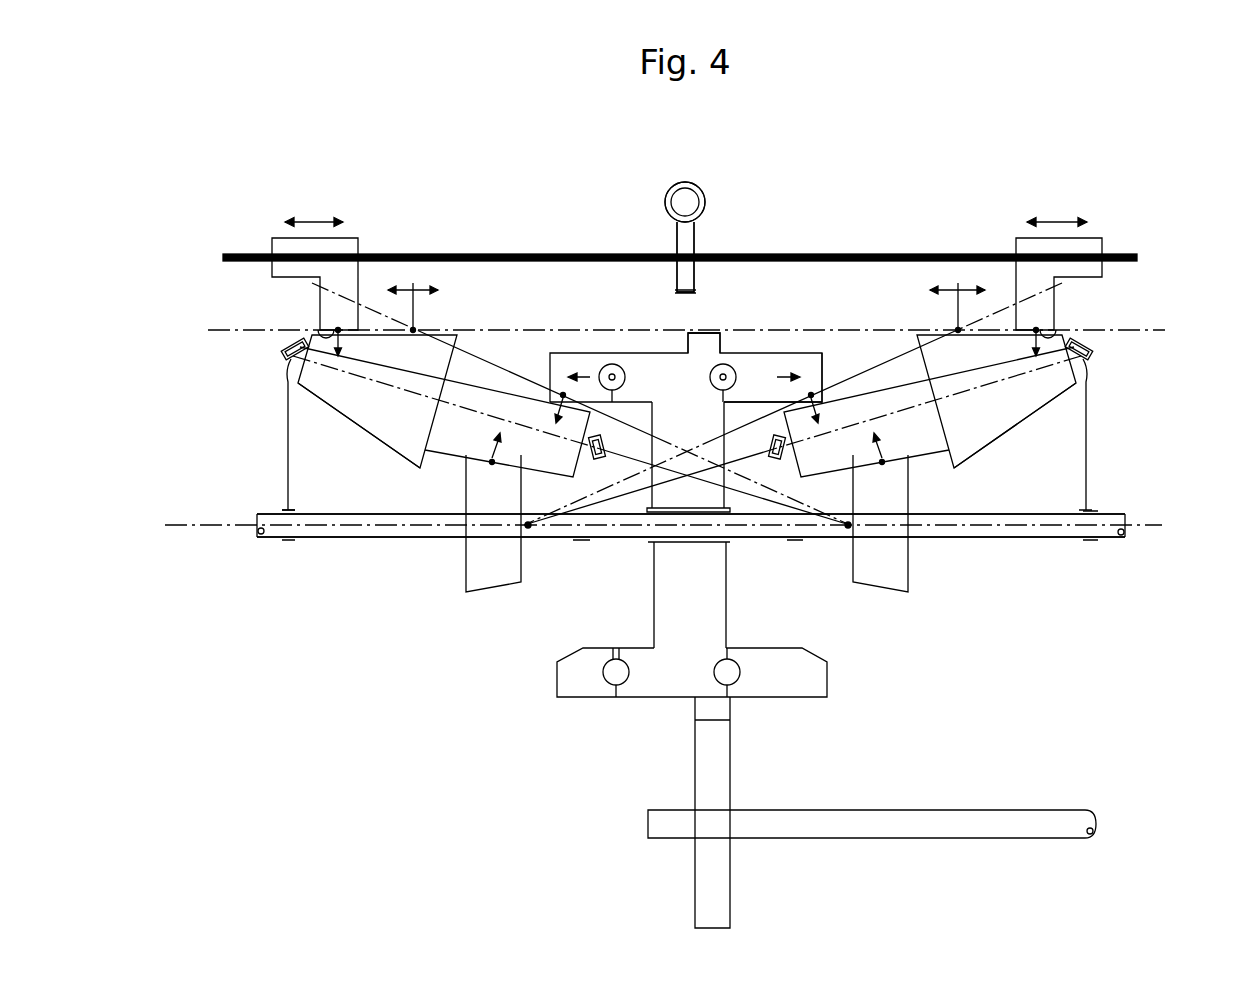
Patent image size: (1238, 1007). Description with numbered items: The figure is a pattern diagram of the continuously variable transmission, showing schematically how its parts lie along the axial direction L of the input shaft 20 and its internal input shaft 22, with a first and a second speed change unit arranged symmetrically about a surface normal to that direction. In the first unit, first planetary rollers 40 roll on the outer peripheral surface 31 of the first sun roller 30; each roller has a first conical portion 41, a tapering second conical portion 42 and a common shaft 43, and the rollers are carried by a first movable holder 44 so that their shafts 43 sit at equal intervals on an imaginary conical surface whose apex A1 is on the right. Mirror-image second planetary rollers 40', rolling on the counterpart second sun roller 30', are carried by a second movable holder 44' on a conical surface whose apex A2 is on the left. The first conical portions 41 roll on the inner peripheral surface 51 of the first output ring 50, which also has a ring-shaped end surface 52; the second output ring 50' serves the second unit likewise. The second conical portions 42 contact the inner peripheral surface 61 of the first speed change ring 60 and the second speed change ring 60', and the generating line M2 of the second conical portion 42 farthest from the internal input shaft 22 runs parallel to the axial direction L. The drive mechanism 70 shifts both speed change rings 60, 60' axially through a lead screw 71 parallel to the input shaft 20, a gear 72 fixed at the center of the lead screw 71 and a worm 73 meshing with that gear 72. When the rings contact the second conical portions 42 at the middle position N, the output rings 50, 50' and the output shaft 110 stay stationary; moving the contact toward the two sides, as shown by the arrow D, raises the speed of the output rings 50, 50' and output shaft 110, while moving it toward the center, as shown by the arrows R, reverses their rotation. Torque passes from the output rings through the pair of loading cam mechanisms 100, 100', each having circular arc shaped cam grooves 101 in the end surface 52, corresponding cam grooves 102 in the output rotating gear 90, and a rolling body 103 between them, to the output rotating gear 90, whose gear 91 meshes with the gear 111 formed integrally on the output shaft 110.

The input shaft 20 is at (691, 581).
The internal input shaft 22 is at (390, 540).
The first sun roller 30 is at (451, 544).
The shift block 30' is at (937, 532).
The outer peripheral surface 31 is at (491, 460).
The first planetary roller 40 is at (377, 422).
The second planetary roller 40' is at (996, 422).
The first conical portion 41 is at (478, 356).
The second conical portion 42 is at (347, 425).
The common shaft 43 is at (297, 362).
The first movable holder 44 is at (521, 440).
The second movable holder 44' is at (860, 440).
The first output ring 50 is at (681, 336).
The second output ring 50' is at (776, 336).
The inner peripheral surface 51 is at (558, 395).
The ring-shaped end surface 52 is at (599, 364).
The first speed change ring 60 is at (330, 235).
The second speed change ring 60' is at (1078, 235).
The inner peripheral surface 61 is at (318, 340).
The drive mechanism 70 is at (717, 190).
The lead screw 71 is at (758, 252).
The gear 72 is at (696, 240).
The worm 73 is at (665, 201).
The output rotating gear 90 is at (672, 353).
The gear 91 is at (702, 333).
The loading cam mechanism 100 is at (598, 346).
The loading cam mechanism 100' is at (753, 346).
The cam grooves 101 is at (603, 668).
The cam grooves 102 is at (619, 658).
The rolling body 103 is at (614, 657).
The output shaft 110 is at (912, 811).
The gear 111 is at (718, 778).
The apex A1 is at (849, 531).
The apex A2 is at (529, 531).
The axial direction L is at (176, 523).
The generating line M2 is at (512, 327).
The middle position N is at (686, 297).
The arrow D is at (683, 292).
The arrows R is at (684, 292).